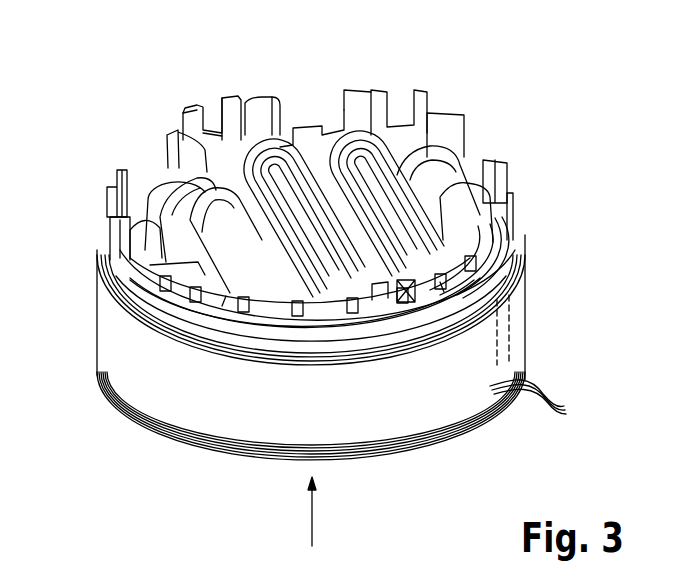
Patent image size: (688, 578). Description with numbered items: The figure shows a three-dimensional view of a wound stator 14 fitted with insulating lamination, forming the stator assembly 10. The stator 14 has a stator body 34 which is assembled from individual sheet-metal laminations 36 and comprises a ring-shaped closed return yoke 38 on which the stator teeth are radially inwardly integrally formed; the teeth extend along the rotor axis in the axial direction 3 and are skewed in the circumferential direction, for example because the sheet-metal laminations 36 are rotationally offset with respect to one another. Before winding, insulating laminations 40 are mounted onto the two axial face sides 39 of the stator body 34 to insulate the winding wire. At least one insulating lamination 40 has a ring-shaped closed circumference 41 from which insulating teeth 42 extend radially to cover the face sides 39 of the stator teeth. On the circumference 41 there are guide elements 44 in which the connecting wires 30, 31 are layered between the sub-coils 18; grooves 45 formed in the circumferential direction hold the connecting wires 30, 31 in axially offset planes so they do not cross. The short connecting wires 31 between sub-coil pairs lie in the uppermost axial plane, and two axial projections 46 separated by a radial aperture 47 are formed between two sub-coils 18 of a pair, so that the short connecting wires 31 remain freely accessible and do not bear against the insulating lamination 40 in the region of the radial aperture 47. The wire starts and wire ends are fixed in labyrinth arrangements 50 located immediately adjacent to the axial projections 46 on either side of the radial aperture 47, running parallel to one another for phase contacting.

The axial direction 3 is at (312, 521).
The stator assembly 10 is at (214, 463).
The stator 14 is at (396, 237).
The sub-coil 18 is at (108, 222).
The connecting wire 30 is at (112, 246).
The short connecting wire 31 is at (226, 296).
The stator body 34 is at (523, 337).
The sheet-metal lamination 36 is at (544, 401).
The return yoke 38 is at (520, 252).
The axial face side 39 is at (523, 240).
The insulating lamination 40 is at (527, 260).
The ring-shaped closed circumference 41 is at (158, 320).
The insulating tooth 42 is at (170, 172).
The guide element 44 is at (267, 103).
The groove 45 is at (523, 277).
The axial projection 46 is at (233, 97).
The radial aperture 47 is at (210, 122).
The labyrinth arrangement 50 is at (357, 73).